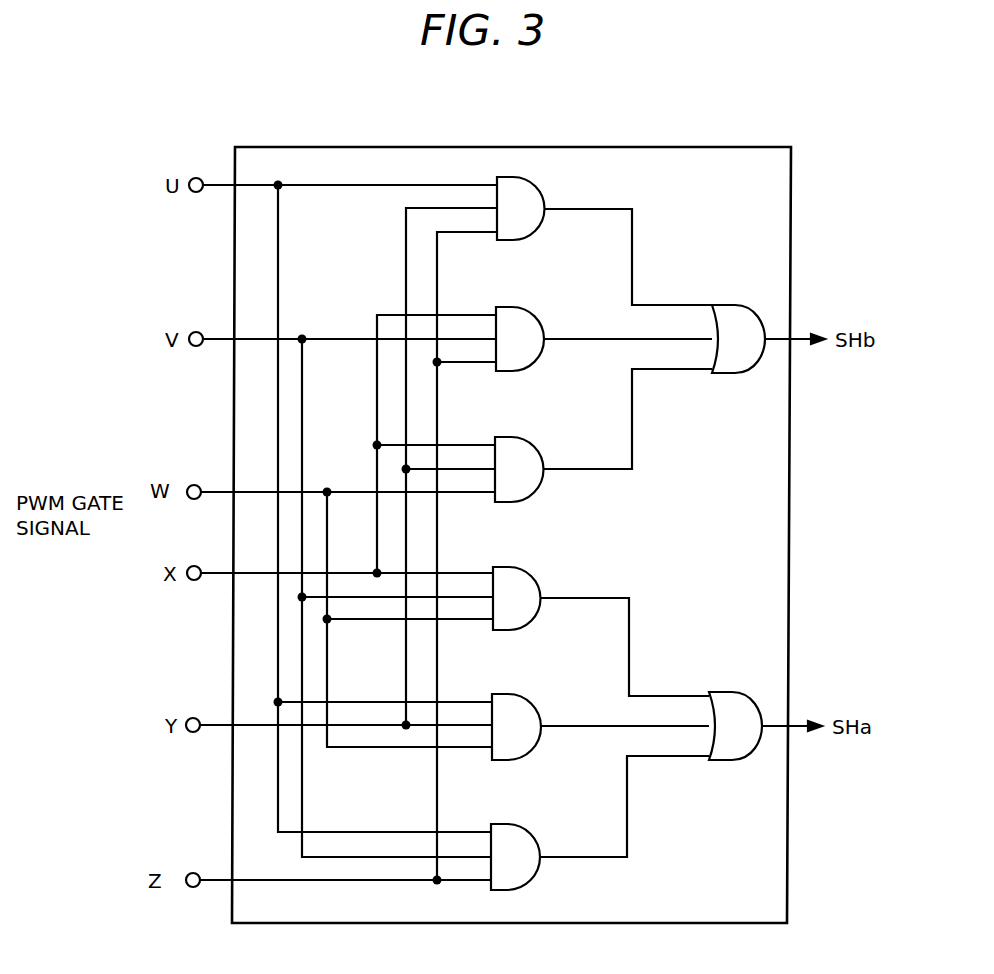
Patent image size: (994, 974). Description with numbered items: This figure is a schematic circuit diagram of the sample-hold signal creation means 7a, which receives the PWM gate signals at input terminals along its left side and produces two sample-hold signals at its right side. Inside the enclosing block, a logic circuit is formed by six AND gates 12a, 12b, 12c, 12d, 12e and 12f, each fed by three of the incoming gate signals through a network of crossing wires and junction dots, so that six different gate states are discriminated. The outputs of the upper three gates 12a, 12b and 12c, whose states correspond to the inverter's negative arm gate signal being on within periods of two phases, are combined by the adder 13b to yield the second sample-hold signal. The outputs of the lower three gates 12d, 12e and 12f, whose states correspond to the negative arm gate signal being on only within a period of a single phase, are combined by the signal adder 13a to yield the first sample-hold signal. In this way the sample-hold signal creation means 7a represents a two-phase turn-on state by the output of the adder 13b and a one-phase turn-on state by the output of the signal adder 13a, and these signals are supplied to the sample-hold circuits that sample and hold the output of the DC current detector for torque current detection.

The sample-hold signal creation means 7a is at (703, 905).
The AND gate of logic circuit 12a is at (533, 227).
The AND gate of logic circuit 12b is at (532, 357).
The AND gate of logic circuit 12c is at (531, 488).
The AND gate of logic circuit 12d is at (529, 616).
The AND gate of logic circuit 12e is at (528, 744).
The AND gate of logic circuit 12f is at (527, 874).
The signal adder 13a is at (735, 760).
The adder 13b is at (737, 367).